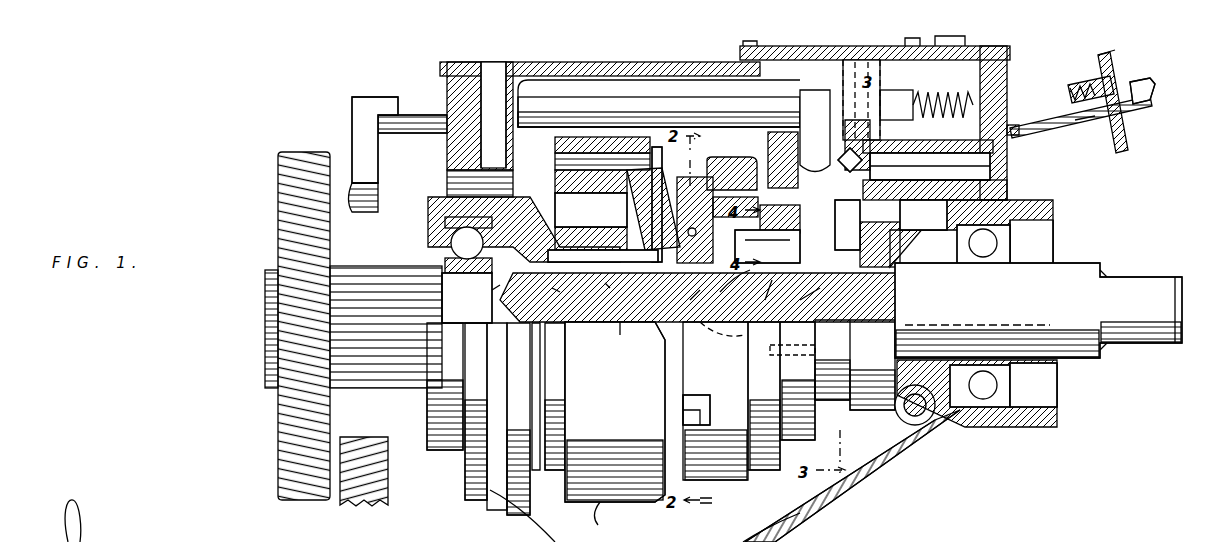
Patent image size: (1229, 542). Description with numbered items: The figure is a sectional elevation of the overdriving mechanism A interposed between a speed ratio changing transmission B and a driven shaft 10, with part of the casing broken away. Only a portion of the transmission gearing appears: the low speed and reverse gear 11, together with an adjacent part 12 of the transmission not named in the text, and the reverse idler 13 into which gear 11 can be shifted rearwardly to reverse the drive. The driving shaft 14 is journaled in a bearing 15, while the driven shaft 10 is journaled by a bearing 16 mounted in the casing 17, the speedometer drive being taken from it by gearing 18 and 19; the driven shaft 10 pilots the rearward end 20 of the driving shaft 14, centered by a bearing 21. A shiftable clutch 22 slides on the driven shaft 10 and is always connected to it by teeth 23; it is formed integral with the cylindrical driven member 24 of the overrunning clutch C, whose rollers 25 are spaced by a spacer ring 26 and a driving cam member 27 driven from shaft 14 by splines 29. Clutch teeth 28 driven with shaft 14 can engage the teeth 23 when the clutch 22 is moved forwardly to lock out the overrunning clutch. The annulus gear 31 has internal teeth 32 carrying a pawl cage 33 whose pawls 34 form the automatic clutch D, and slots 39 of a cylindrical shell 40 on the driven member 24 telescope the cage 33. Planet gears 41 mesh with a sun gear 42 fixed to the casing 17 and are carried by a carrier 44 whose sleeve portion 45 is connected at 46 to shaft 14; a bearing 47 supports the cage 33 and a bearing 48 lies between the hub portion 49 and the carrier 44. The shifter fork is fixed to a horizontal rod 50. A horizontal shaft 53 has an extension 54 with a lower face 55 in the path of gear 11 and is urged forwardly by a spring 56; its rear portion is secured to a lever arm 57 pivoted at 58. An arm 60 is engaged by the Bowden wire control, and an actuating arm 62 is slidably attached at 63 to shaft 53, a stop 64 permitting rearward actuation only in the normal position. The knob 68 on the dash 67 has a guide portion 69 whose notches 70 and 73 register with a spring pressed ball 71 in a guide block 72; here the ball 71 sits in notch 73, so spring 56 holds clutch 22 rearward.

The driven shaft 10 is at (1085, 368).
The low speed and reverse gear 11 is at (278, 428).
The hub 12 is at (560, 295).
The reverse idler 13 is at (360, 508).
The driving shaft 14 is at (578, 330).
The bearing 15 is at (470, 262).
The bearing 16 is at (975, 428).
The casing 17 is at (895, 452).
The speedometer drive gearing 18 is at (900, 245).
The speedometer drive gearing 19 is at (900, 418).
The rearward end of the driving shaft 20 is at (790, 335).
The bearing 21 is at (920, 268).
The shiftable clutch 22 is at (885, 240).
The teeth 23 is at (866, 228).
The cylindrical driven member 24 is at (735, 198).
The rollers 25 is at (790, 215).
The spacer ring 26 is at (790, 233).
The driving cam member 27 is at (760, 297).
The clutch teeth 28 is at (802, 298).
The splines 29 is at (725, 285).
The annulus gear 31 is at (555, 143).
The internal teeth 32 is at (655, 147).
The pawl cage 33 is at (690, 224).
The pawls 34 is at (660, 248).
The slots 39 is at (702, 395).
The cylindrical shell 40 is at (728, 158).
The planet gears 41 is at (555, 160).
The sun gear 42 is at (565, 296).
The carrier 44 is at (620, 193).
The sleeve portion 45 is at (477, 298).
The driving connection 46 is at (685, 302).
The bearing 47 is at (605, 294).
The bearing 48 is at (600, 193).
The hub portion 49 is at (606, 256).
The horizontal rod 50 is at (925, 167).
The horizontal shaft 53 is at (425, 110).
The extension 54 is at (380, 160).
The lower face 55 is at (352, 200).
The spring 56 is at (955, 90).
The lever arm 57 is at (895, 108).
The pivot 58 is at (900, 95).
The arm 60 is at (977, 327).
The actuating arm 62 is at (800, 115).
The sliding attachment 63 is at (798, 92).
The stop 64 is at (843, 96).
The dash 67 is at (1110, 52).
The handle or knob 68 is at (1165, 86).
The guide portion 69 is at (1080, 125).
The notch 70 is at (1060, 113).
The spring pressed ball 71 is at (1068, 90).
The guide block 72 is at (1120, 78).
The notch 73 is at (1125, 125).
The overdriving mechanism A is at (606, 498).
The speed ratio changing transmission B is at (290, 150).
The overrunning clutch C is at (722, 328).
The automatic clutch D is at (626, 328).